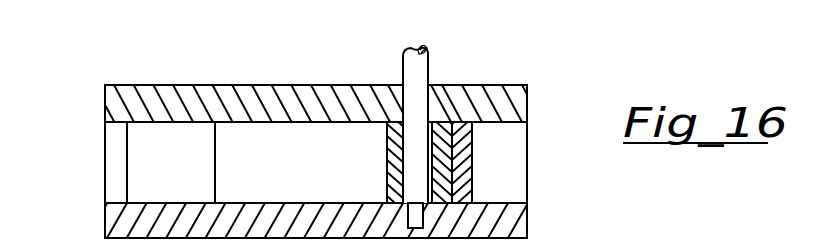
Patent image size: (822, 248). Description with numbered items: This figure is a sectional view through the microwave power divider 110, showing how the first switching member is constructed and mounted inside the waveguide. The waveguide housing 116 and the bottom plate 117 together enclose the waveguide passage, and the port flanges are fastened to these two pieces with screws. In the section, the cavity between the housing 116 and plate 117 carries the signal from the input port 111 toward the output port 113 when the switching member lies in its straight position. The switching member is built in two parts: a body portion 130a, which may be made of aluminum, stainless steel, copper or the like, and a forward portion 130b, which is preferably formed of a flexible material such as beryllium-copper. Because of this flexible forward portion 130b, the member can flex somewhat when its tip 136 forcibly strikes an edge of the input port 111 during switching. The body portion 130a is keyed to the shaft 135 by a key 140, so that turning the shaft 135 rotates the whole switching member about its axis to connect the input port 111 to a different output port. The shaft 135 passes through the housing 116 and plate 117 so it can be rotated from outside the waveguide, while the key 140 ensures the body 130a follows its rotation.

The waveguide power divider 110 is at (341, 52).
The input port 111 is at (117, 145).
The output port 113 is at (513, 173).
The waveguide housing 116 is at (527, 228).
The bottom plate 117 is at (527, 113).
The body portion 130a is at (301, 147).
The forward portion 130b is at (174, 162).
The shaft 135 is at (429, 64).
The tip 136 is at (118, 187).
The key 140 is at (433, 125).